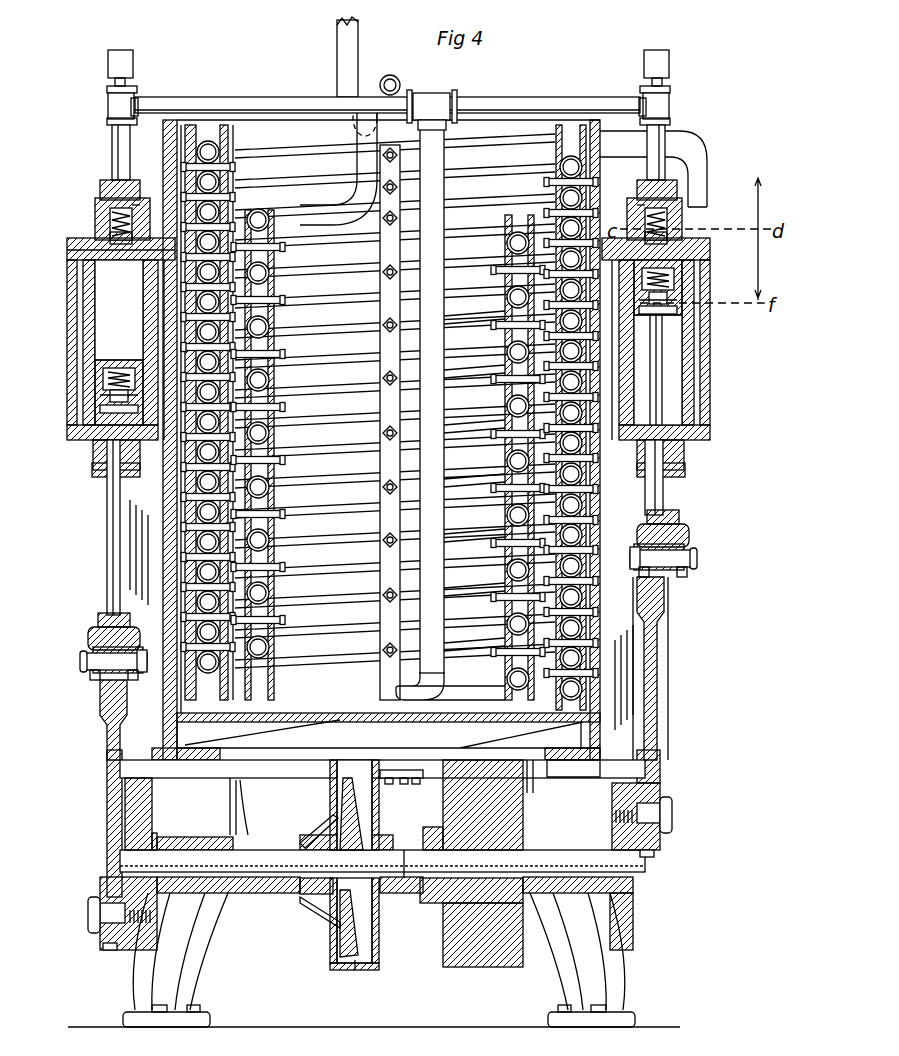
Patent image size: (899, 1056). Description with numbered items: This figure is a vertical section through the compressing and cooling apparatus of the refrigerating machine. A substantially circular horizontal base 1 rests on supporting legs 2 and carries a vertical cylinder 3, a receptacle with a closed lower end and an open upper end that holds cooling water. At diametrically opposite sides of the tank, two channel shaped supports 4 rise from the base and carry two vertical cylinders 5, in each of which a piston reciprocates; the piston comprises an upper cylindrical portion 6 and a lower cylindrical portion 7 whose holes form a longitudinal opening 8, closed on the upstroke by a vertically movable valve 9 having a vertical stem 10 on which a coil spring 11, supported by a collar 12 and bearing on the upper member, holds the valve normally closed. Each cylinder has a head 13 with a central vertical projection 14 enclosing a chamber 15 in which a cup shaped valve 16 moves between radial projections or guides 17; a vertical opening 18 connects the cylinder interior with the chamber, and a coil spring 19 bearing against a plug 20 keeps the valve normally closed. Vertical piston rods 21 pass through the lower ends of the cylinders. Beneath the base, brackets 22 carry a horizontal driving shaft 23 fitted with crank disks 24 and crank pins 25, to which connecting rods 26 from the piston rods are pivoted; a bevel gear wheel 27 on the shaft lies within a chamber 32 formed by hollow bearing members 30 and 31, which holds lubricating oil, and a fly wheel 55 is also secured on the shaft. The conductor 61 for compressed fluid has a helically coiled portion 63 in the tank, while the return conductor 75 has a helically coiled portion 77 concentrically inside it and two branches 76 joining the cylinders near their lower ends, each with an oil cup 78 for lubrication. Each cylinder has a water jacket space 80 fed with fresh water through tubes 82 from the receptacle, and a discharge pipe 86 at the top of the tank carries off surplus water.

The horizontal base 1 is at (253, 725).
The supporting legs 2 is at (245, 812).
The vertical cylinder 3 is at (145, 712).
The channel shaped supports 4 is at (135, 522).
The vertical cylinders 5 is at (67, 303).
The upper cylindrical portion 6 is at (103, 378).
The lower cylindrical portion 7 is at (103, 406).
The longitudinal opening 8 is at (110, 392).
The vertically movable valve 9 is at (115, 368).
The vertical stem 10 is at (97, 368).
The coil spring 11 is at (100, 393).
The collar 12 is at (80, 430).
The head 13 is at (70, 258).
The central vertical projection 14 is at (100, 205).
The chamber 15 is at (108, 218).
The cup shaped valve 16 is at (110, 226).
The radial projections or guides 17 is at (67, 243).
The vertical opening 18 is at (112, 262).
The coil spring 19 is at (140, 217).
The plug 20 is at (133, 190).
The vertical piston rods 21 is at (107, 492).
The brackets 22 is at (228, 893).
The horizontal driving shaft 23 is at (410, 865).
The crank disks 24 is at (130, 805).
The crank pin 25 is at (88, 915).
The connecting rods 26 is at (107, 763).
The bevel gear wheel 27 is at (340, 947).
The upper hollow bearing member 30 is at (405, 778).
The lower hollow bearing member 31 is at (374, 955).
The chamber 32 is at (362, 955).
The fly wheel 55 is at (500, 967).
The conductor 61 is at (400, 68).
The helically coiled portion 63 is at (253, 145).
The return conductor 75 is at (337, 45).
The branches 76 is at (192, 97).
The helically coiled portion 77 is at (480, 250).
The oil cup 78 is at (108, 68).
The water jacket space 80 is at (70, 312).
The tubes 82 is at (164, 270).
The discharge pipe 86 is at (692, 145).